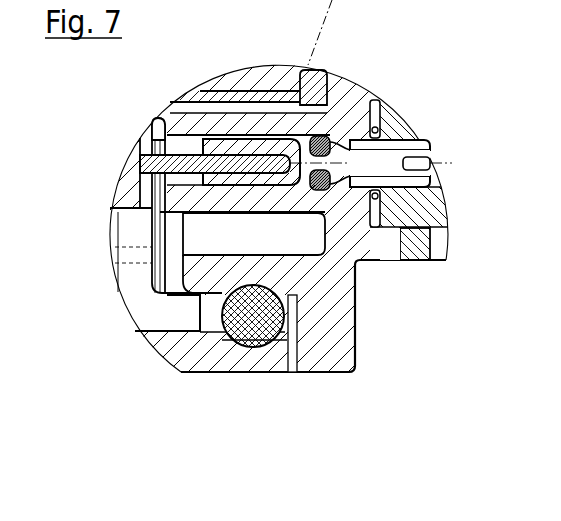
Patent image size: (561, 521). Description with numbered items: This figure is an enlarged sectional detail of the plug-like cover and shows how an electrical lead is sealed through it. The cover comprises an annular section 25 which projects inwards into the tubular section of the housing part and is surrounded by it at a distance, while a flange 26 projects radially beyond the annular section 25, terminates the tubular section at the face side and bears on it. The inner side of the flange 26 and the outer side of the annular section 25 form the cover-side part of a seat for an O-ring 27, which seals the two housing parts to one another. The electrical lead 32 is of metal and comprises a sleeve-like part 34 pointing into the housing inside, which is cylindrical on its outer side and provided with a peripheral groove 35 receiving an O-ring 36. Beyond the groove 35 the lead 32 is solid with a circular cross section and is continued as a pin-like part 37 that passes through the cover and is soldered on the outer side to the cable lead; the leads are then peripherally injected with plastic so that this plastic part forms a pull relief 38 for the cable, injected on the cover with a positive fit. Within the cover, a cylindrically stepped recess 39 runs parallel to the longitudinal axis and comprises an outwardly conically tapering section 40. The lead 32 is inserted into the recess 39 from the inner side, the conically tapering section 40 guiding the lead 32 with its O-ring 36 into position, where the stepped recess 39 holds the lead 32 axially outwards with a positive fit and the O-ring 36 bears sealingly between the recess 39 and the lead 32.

The annular section 25 is at (207, 245).
The flange 26 is at (338, 352).
The O-ring 27 is at (288, 318).
The electrical lead 32 is at (376, 127).
The sleeve-like part 34 is at (257, 145).
The peripheral groove 35 is at (330, 192).
The O-ring 36 is at (330, 140).
The pin-like part 37 is at (420, 148).
The pull relief 38 is at (445, 203).
The cylindrically stepped recess 39 is at (165, 126).
The conically tapering section 40 is at (263, 128).